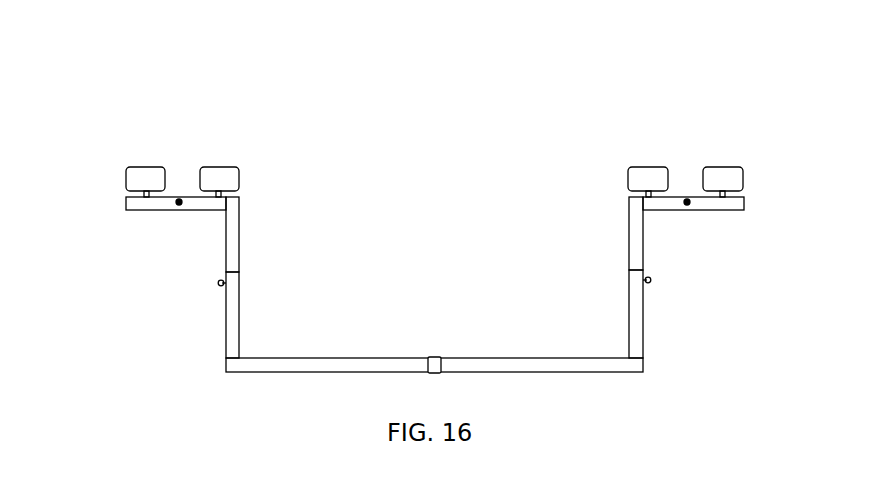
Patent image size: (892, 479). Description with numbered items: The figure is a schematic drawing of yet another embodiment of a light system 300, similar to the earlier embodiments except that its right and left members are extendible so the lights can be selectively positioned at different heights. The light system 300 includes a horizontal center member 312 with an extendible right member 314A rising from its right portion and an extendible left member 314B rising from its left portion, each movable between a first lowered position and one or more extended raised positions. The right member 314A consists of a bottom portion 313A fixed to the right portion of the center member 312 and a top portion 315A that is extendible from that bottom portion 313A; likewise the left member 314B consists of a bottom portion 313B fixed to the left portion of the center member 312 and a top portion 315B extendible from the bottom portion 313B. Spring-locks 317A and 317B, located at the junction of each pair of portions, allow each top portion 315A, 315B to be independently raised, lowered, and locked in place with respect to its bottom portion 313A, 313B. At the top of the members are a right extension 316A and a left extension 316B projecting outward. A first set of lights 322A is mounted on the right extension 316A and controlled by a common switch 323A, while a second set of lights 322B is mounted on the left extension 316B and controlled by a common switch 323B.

The light system 300 is at (355, 103).
The center member 312 is at (520, 371).
The bottom portion 313A is at (629, 308).
The bottom portion 313B is at (233, 300).
The right member 314A is at (685, 229).
The left member 314B is at (189, 236).
The top portion 315A is at (629, 240).
The top portion 315B is at (240, 245).
The right extension 316A is at (653, 206).
The left extension 316B is at (203, 211).
The spring-lock 317A is at (651, 281).
The spring-lock 317B is at (217, 285).
The first set of lights 322A is at (757, 167).
The second set of lights 322B is at (262, 168).
The common switch 323A is at (690, 202).
The common switch 323B is at (176, 201).